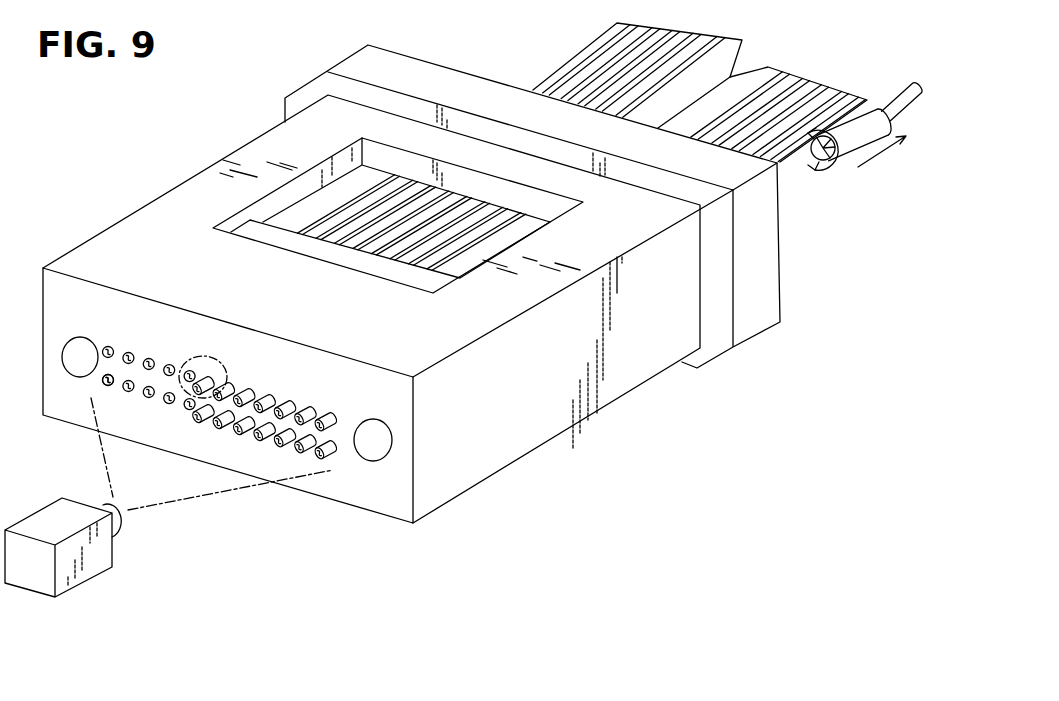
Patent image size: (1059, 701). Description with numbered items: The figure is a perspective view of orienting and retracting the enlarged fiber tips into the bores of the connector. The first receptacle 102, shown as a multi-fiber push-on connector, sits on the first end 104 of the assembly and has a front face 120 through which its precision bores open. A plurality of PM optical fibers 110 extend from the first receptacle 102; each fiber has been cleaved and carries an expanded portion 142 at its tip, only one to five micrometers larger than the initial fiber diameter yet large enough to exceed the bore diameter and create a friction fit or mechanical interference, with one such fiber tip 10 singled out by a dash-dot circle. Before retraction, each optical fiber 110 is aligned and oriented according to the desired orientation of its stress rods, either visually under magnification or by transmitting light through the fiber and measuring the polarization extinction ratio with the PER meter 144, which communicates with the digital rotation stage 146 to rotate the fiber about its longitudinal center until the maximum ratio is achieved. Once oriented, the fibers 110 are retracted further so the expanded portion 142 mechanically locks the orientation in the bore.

The contact pin 10 is at (218, 356).
The first receptacle 102 is at (763, 247).
The first end 104 is at (103, 382).
The PM optical fibers 110 is at (788, 82).
The front face 120 is at (390, 497).
The expanded portion 142 is at (193, 376).
The polarization extinction ratio (PER) meter 144 is at (97, 565).
The digital rotation stage 146 is at (860, 120).